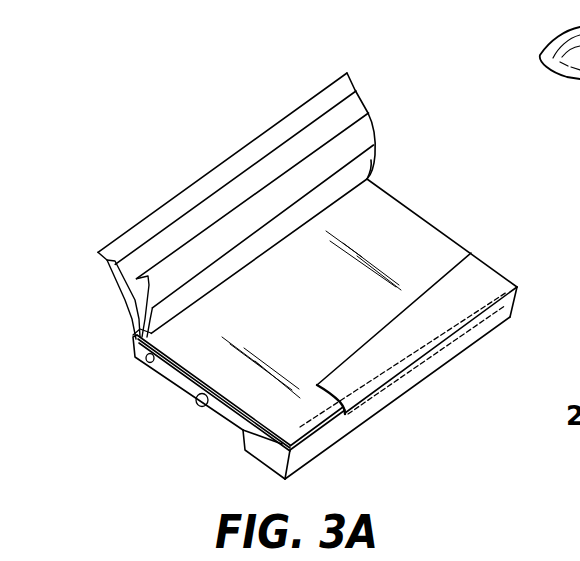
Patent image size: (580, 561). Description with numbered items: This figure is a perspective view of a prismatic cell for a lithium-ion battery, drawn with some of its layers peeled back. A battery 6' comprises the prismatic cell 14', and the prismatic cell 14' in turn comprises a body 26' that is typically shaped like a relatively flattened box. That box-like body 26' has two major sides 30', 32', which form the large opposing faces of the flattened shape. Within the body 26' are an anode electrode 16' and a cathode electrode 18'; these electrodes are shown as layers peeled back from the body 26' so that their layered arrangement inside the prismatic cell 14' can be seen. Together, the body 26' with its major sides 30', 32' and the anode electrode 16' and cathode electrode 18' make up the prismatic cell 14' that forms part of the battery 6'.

The battery 6' is at (310, 274).
The prismatic cell 14' is at (220, 202).
The anode electrode 16' is at (108, 295).
The cathode electrode 18' is at (217, 280).
The body 26' is at (327, 313).
The major side 30' is at (428, 327).
The major side 32' is at (397, 400).